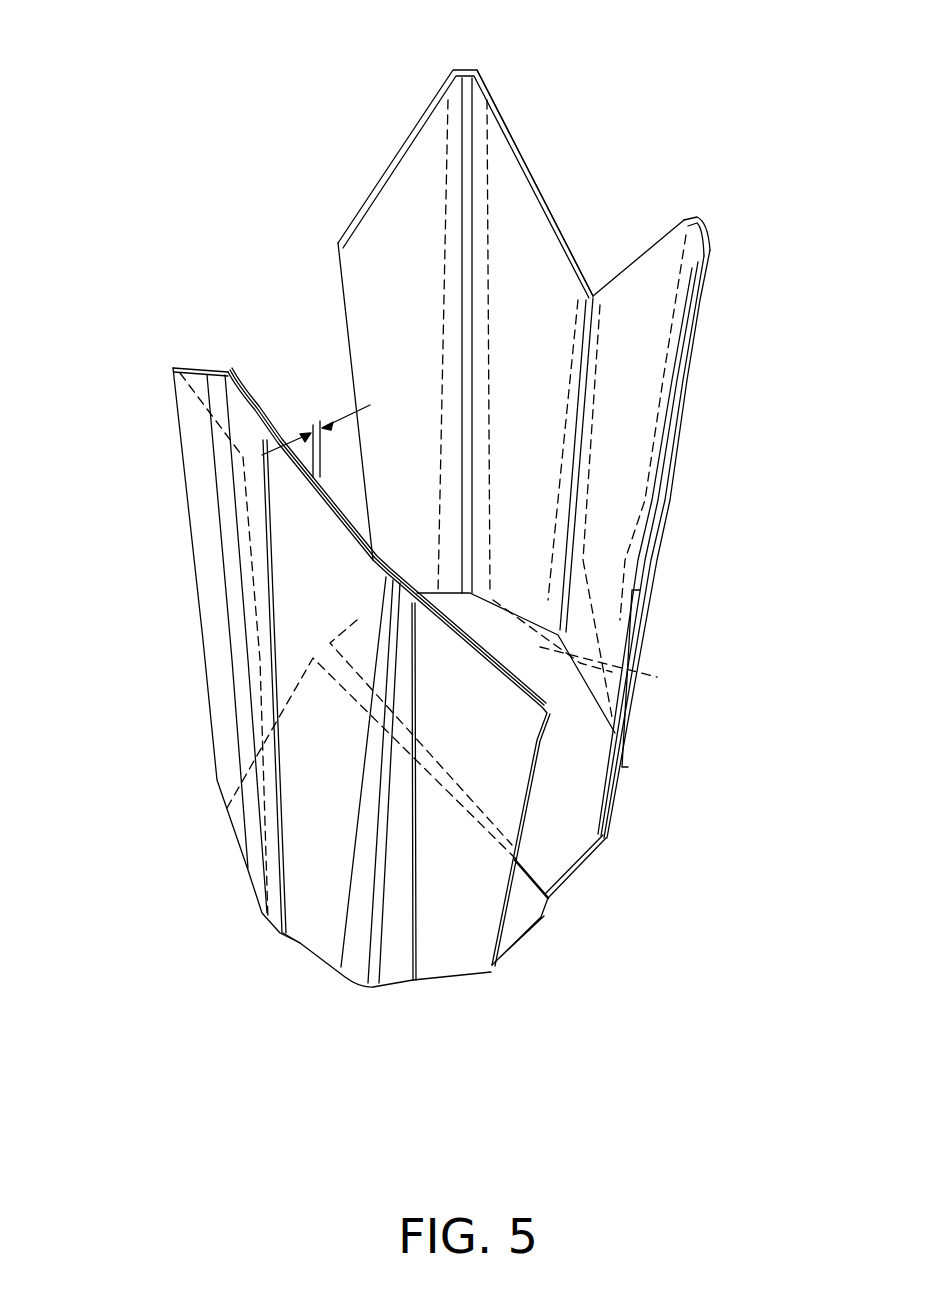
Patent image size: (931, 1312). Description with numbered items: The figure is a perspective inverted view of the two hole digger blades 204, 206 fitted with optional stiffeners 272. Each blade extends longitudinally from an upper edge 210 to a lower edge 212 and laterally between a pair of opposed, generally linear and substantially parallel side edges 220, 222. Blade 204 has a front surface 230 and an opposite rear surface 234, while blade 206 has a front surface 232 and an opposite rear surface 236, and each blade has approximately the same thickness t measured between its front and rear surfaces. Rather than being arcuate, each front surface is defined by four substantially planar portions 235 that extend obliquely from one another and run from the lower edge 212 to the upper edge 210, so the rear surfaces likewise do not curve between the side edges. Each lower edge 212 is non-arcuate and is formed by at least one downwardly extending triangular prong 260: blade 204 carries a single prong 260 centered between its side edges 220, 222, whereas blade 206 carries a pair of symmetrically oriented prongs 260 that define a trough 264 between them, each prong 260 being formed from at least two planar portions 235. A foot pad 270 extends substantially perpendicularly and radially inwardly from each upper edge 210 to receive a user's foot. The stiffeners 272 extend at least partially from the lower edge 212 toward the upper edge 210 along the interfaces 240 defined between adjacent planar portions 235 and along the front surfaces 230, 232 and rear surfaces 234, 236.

The prong 260 is at (452, 118).
The lower edge 212 is at (380, 183).
The front surface 232 is at (528, 222).
The trough 264 is at (593, 296).
The planar portion 235 is at (383, 298).
The side edge 222 is at (343, 298).
The front surface 230 is at (243, 390).
The thickness t is at (313, 427).
The rear surface 236 is at (696, 332).
The blade 206 is at (683, 377).
The interface 240 is at (585, 418).
The rear surface 234 is at (207, 553).
The side edge 220 is at (635, 603).
The stiffener 272 is at (648, 638).
The blade 204 is at (225, 738).
The upper edge 210 is at (308, 953).
The foot pad 270 is at (577, 877).